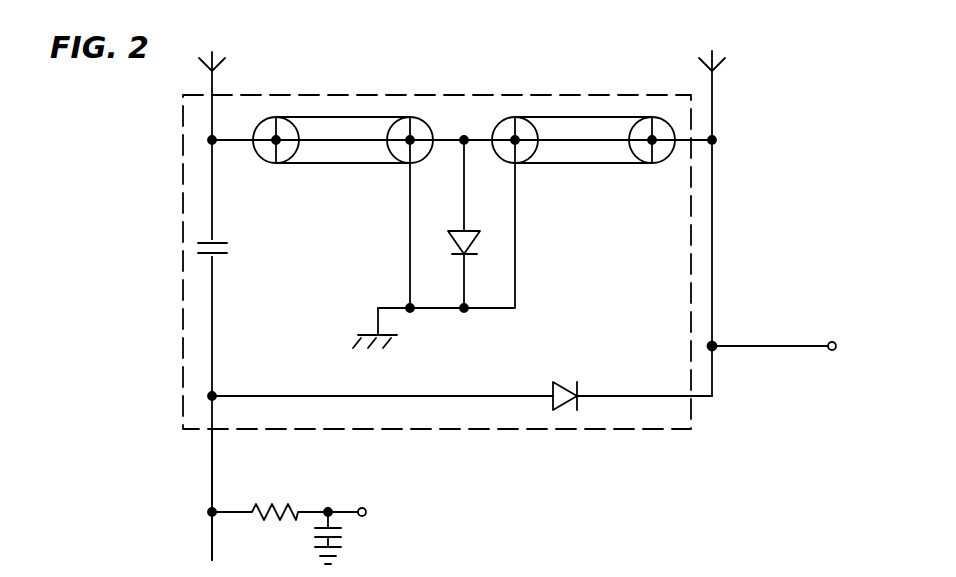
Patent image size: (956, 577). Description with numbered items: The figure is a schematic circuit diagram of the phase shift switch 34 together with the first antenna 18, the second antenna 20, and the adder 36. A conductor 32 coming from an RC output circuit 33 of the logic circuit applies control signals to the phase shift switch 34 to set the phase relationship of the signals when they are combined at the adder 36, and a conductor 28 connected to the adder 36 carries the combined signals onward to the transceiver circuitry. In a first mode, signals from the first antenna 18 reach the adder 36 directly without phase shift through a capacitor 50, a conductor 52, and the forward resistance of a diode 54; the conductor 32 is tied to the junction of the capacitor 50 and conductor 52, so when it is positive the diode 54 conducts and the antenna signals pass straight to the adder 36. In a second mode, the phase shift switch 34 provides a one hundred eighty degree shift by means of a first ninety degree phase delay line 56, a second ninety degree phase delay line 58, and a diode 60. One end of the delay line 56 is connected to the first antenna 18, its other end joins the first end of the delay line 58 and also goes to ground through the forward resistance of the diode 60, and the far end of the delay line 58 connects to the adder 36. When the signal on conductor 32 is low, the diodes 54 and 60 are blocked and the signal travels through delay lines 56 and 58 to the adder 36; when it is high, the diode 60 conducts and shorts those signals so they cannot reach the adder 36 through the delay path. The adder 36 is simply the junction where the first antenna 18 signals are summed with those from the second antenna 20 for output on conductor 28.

The first antenna 18 is at (214, 78).
The second antenna 20 is at (714, 78).
The conductor 28 is at (795, 348).
The conductor 32 is at (212, 478).
The RC output circuit 33 is at (345, 533).
The phase shift switch 34 is at (470, 112).
The adder 36 is at (714, 344).
The capacitor 50 is at (228, 245).
The conductor 52 is at (405, 395).
The diode 54 is at (553, 392).
The first 90° phase delay line 56 is at (381, 153).
The second 90° phase delay line 58 is at (622, 153).
The diode 60 is at (470, 240).